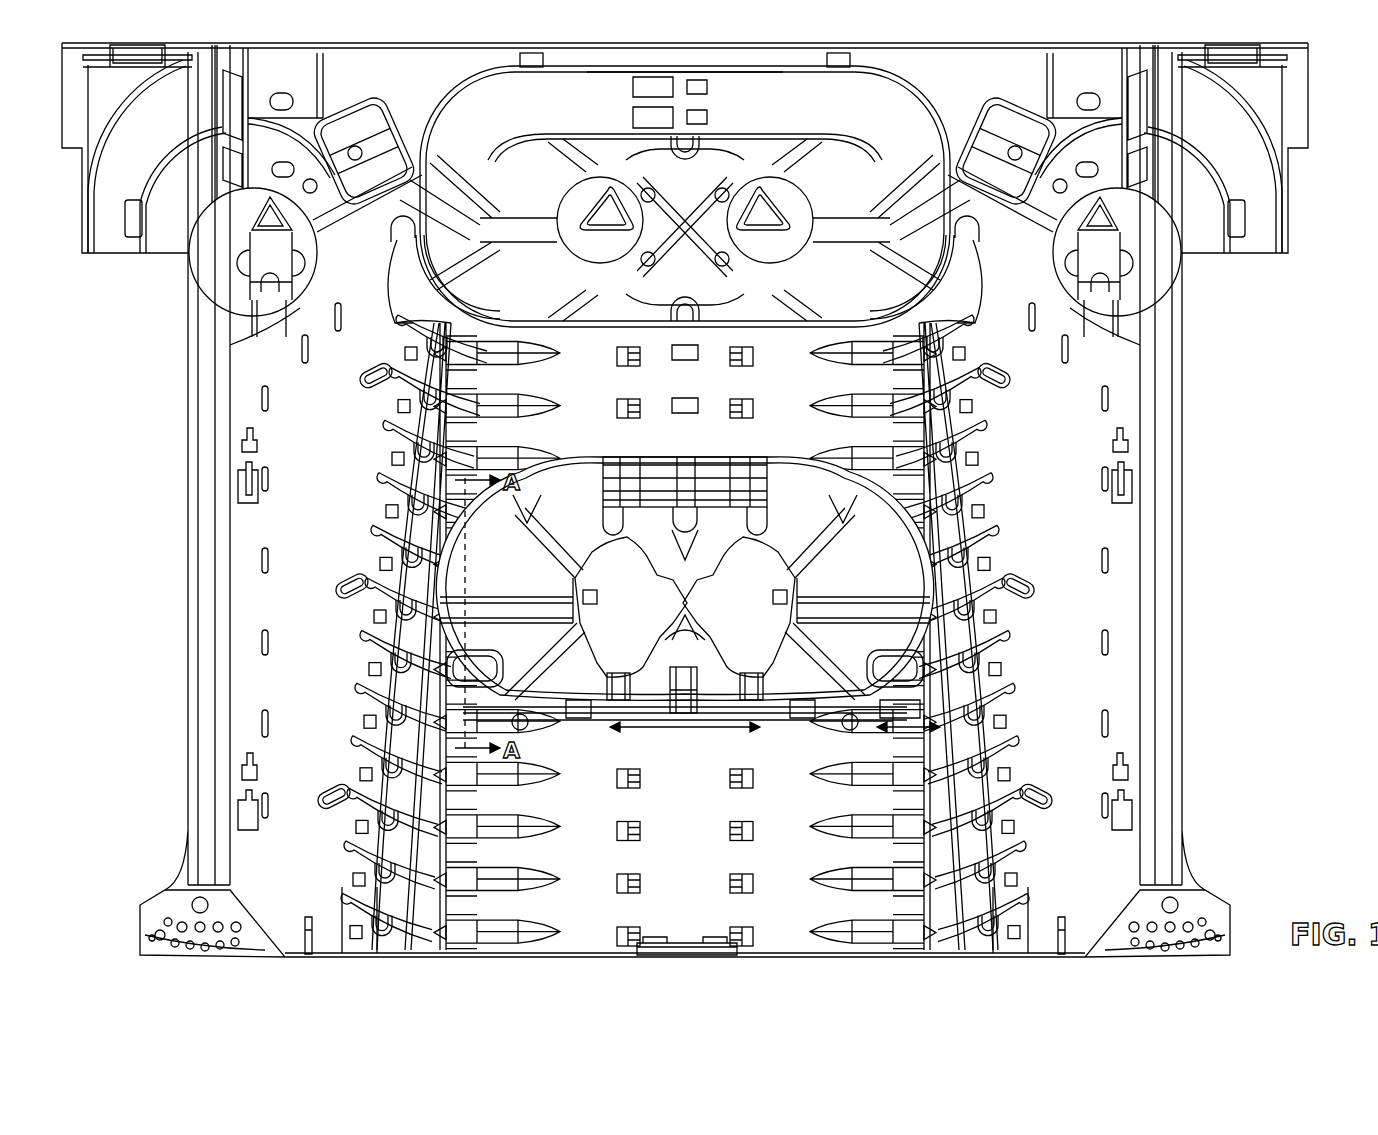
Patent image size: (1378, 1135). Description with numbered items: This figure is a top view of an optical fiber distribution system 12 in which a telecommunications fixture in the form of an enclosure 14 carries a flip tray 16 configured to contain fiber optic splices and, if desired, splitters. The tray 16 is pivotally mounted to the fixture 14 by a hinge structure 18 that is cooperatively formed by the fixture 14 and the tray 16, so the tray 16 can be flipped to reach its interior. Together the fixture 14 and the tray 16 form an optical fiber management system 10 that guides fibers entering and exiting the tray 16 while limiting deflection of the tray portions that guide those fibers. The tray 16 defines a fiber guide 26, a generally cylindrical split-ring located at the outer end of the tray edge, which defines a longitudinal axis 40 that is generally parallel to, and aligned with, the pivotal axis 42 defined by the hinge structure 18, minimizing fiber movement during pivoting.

The optical fiber management system 10 is at (540, 745).
The optical fiber distribution system 12 is at (1243, 418).
The enclosure 14 is at (1180, 548).
The flip tray 16 is at (885, 568).
The hinge structure 18 is at (685, 728).
The fiber guide 26 is at (885, 728).
The longitudinal axis 40 is at (905, 730).
The pivotal axis 42 is at (717, 732).